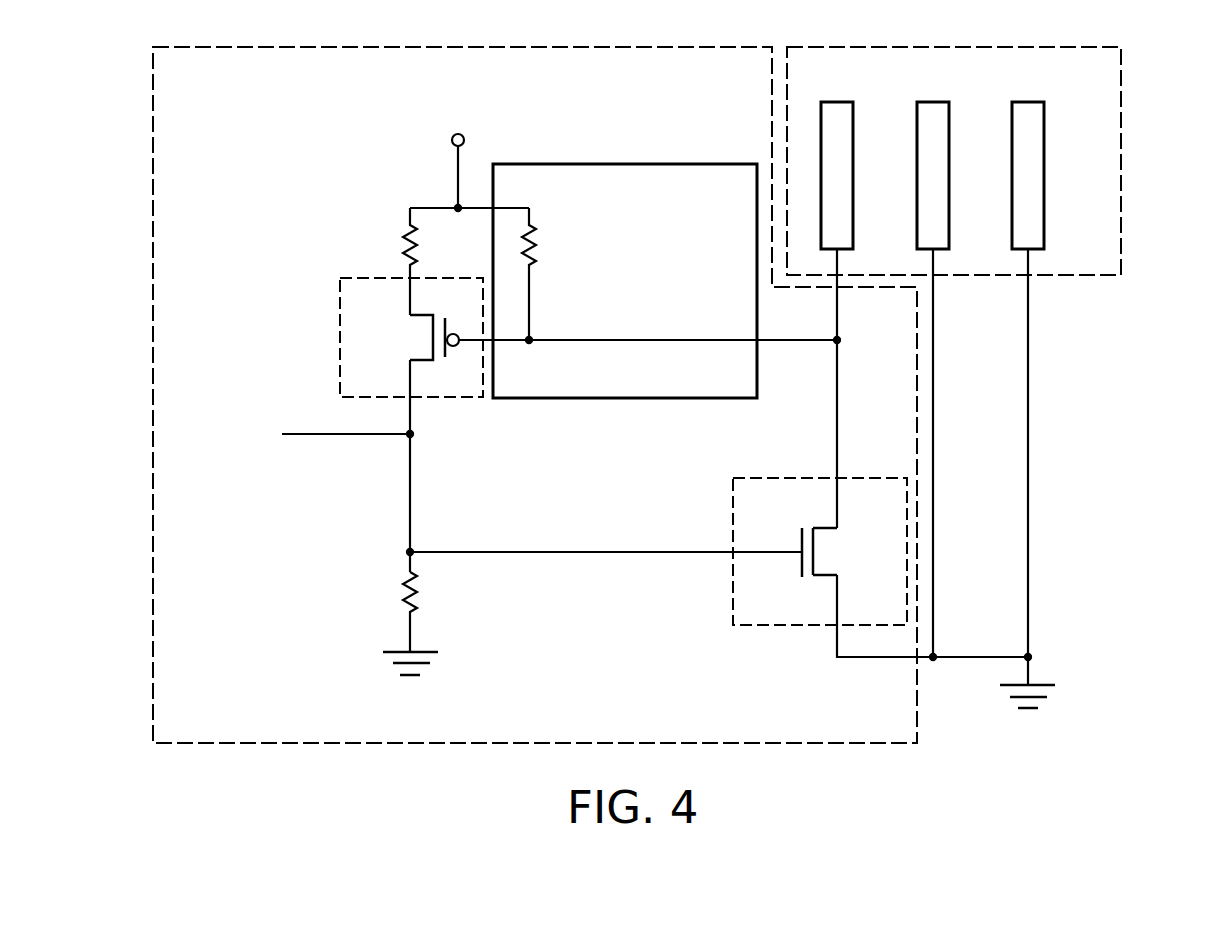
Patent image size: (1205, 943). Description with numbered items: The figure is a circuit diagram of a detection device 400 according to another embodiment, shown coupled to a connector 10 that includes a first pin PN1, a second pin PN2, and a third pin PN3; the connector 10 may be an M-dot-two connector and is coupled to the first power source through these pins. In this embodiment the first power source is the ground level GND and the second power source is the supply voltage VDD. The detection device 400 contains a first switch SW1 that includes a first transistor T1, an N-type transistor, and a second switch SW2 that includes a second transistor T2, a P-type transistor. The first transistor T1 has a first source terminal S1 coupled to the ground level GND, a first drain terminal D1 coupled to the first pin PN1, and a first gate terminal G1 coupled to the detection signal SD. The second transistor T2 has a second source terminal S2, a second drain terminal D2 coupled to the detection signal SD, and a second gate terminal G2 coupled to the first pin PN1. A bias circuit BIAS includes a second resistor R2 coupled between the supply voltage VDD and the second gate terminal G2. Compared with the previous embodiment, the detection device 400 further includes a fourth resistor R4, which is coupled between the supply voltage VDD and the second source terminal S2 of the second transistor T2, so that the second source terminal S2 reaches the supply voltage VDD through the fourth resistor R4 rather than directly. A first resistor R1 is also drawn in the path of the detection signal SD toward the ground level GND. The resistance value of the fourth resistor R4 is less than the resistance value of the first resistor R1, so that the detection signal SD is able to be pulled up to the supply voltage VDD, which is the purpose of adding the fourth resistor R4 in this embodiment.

The detection device 400 is at (152, 135).
The connector 10 is at (1121, 160).
The first pin PN1 is at (838, 296).
The second pin PN2 is at (934, 360).
The third pin PN3 is at (1029, 374).
The bias circuit BIAS is at (625, 163).
The supply voltage VDD is at (456, 153).
The ground level GND is at (411, 684).
The detection signal SD is at (324, 435).
The first resistor R1 is at (400, 593).
The second resistor R2 is at (537, 240).
The fourth resistor R4 is at (403, 235).
The first switch SW1 is at (767, 551).
The second switch SW2 is at (357, 337).
The first transistor T1 is at (822, 550).
The second transistor T2 is at (416, 338).
The first gate terminal G1 is at (778, 532).
The first drain terminal D1 is at (863, 512).
The first source terminal S1 is at (861, 594).
The second gate terminal G2 is at (439, 377).
The second drain terminal D2 is at (389, 377).
The second source terminal S2 is at (392, 299).